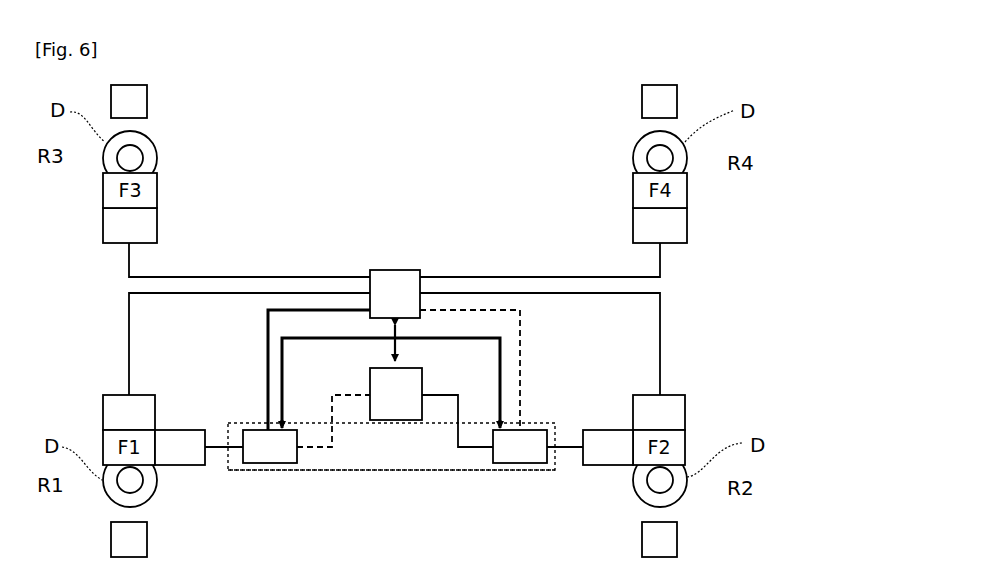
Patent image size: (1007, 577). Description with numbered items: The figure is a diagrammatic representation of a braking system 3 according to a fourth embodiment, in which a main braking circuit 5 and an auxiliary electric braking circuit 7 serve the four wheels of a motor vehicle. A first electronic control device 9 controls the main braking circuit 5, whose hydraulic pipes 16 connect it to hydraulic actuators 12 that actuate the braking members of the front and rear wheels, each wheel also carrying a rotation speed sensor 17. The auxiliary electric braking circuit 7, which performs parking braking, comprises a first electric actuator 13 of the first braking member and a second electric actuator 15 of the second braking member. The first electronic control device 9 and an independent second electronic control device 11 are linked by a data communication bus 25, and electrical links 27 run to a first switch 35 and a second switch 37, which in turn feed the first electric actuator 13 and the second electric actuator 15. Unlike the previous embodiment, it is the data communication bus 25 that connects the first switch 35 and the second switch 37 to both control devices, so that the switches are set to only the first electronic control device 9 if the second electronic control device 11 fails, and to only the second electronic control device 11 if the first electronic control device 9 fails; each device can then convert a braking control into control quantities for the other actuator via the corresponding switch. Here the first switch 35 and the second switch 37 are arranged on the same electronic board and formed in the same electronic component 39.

The braking system 3 is at (747, 316).
The main braking circuit 5 is at (512, 258).
The auxiliary electric braking circuit 7 is at (427, 486).
The first electronic control device 9 is at (395, 294).
The second electronic control device 11 is at (396, 394).
The actuator 12 is at (395, 319).
The first electric actuator 13 is at (199, 447).
The second electric actuator 15 is at (590, 447).
The hydraulic pipe 16 is at (322, 277).
The rotation speed sensor 17 is at (394, 321).
The data communication bus 25 is at (438, 342).
The electrical link 27 is at (267, 332).
The first switch 35 is at (270, 446).
The second switch 37 is at (520, 446).
The electronic component 39 is at (355, 475).